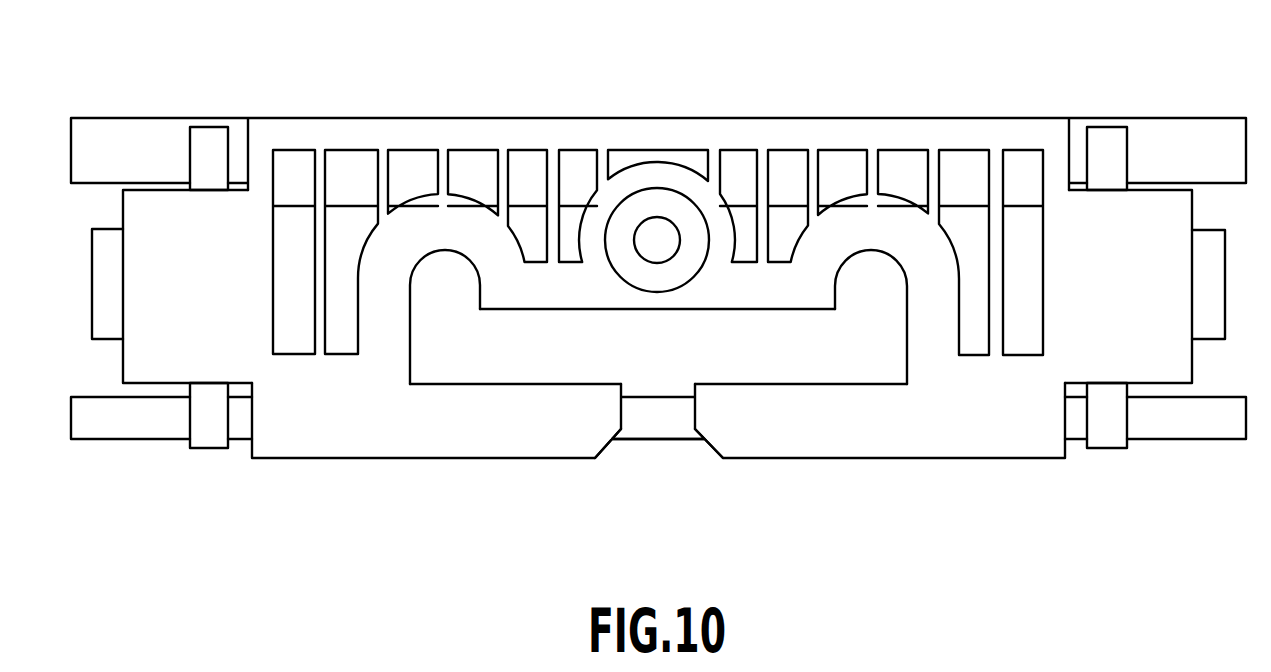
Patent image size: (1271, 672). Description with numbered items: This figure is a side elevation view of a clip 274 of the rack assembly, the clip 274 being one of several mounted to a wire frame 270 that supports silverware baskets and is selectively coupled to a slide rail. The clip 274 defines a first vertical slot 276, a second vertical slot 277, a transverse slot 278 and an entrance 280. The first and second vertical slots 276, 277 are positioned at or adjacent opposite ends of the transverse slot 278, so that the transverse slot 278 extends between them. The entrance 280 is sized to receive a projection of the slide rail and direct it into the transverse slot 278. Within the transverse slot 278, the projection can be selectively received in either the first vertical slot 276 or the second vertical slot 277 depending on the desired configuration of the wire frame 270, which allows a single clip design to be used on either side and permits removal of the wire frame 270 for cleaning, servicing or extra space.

The wire frame 270 is at (1188, 423).
The clip 274 is at (1118, 248).
The first vertical slot 276 is at (448, 265).
The second vertical slot 277 is at (869, 265).
The transverse slot 278 is at (755, 343).
The entrance 280 is at (617, 448).